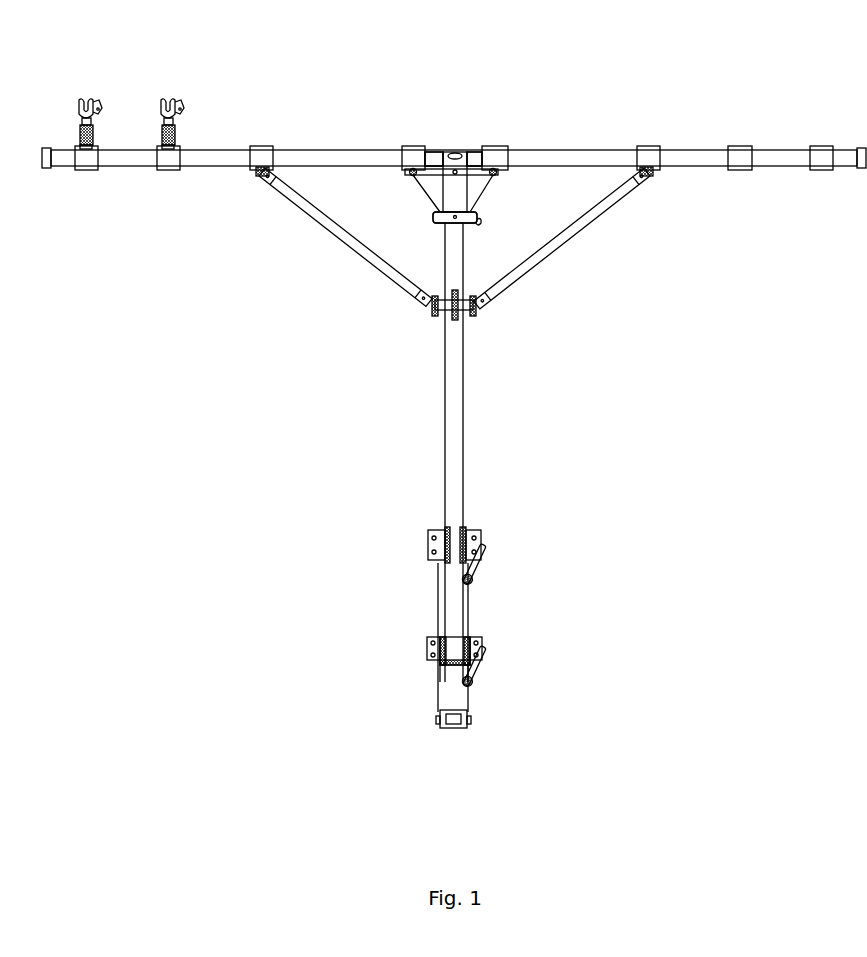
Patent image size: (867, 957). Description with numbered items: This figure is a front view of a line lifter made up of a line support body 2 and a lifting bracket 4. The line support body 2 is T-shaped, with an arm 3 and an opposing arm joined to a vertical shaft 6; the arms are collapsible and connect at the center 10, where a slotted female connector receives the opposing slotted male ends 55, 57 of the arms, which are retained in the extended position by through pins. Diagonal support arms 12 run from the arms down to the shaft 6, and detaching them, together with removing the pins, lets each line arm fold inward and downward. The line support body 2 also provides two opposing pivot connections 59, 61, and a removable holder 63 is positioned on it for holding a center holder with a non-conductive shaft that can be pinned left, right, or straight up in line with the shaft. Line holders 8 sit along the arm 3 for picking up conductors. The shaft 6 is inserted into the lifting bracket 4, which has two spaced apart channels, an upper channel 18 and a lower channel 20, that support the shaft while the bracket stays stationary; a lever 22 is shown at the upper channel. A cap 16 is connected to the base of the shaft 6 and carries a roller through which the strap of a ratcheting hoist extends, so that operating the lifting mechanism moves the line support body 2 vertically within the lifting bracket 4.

The line support body 2 is at (498, 360).
The arm 3 is at (307, 148).
The lifting bracket 4 is at (493, 580).
The vertical shaft 6 is at (447, 428).
The sprinkler heads 8 is at (172, 100).
The center 10 is at (457, 152).
The diagonal support arm 12 is at (312, 217).
The cap 16 is at (448, 735).
The upper channel 18 is at (428, 652).
The lower channel 20 is at (440, 543).
The upper clamp lever 22 is at (465, 527).
The slotted male end 55 is at (483, 155).
The slotted male end 57 is at (425, 155).
The pivot connection 59 is at (493, 172).
The pivot connection 61 is at (413, 175).
The removable holder 63 is at (442, 223).